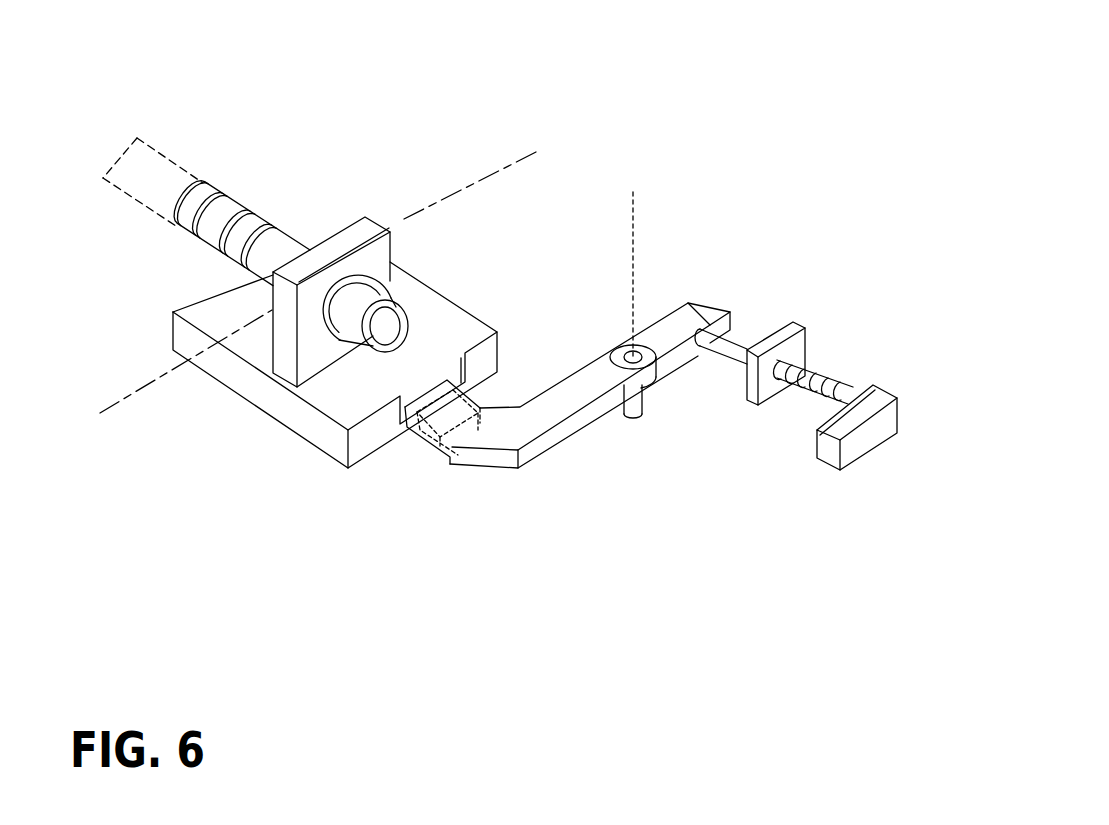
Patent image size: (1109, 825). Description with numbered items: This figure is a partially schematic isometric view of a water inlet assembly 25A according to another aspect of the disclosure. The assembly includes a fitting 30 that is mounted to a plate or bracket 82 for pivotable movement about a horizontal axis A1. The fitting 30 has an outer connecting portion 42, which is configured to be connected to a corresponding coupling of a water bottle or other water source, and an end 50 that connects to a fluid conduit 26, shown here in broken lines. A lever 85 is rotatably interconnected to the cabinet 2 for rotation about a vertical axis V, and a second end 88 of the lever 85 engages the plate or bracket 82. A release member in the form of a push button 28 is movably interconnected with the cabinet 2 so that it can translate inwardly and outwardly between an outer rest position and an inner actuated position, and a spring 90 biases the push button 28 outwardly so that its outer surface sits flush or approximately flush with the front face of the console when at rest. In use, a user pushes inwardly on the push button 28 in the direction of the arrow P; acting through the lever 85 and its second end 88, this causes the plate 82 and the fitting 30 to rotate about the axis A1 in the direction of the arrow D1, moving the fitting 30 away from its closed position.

The cabinet 2 is at (798, 324).
The fluid conduit 26 is at (157, 165).
The push button 28 is at (858, 442).
The fitting 30 is at (312, 234).
The outer connecting portion 42 is at (385, 326).
The end 50 is at (257, 226).
The plate or bracket 82 is at (267, 395).
The lever 85 is at (547, 451).
The second end 88 is at (412, 430).
The spring 90 is at (814, 380).
The water inlet assembly 25A is at (257, 536).
The horizontal axis A1 is at (468, 193).
The direction of rotation D1 is at (113, 388).
The vertical axis V is at (638, 233).
The direction of pushing P is at (907, 457).